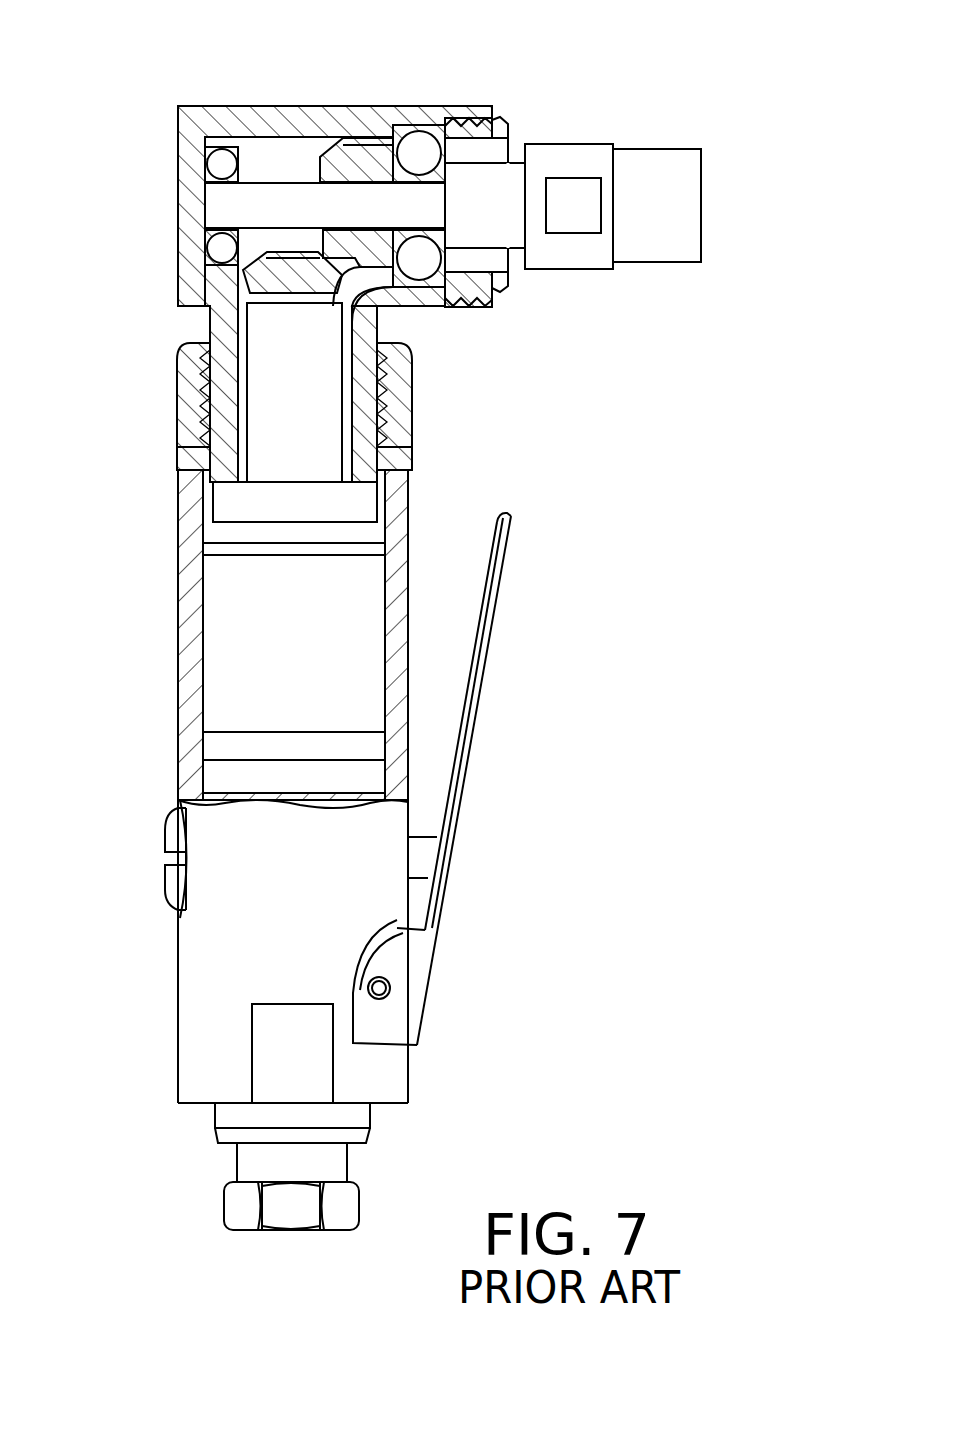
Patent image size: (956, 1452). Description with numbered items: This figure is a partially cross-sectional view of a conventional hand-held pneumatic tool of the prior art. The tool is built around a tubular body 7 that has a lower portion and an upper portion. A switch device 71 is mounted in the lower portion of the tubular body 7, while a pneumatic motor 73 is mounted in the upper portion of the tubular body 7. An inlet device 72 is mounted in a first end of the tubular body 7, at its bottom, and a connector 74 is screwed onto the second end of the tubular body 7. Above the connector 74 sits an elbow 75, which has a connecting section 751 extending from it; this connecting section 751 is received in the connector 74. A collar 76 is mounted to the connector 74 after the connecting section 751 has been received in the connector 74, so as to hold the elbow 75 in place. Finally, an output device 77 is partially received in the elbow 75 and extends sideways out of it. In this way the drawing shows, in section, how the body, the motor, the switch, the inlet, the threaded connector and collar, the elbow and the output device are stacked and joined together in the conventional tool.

The elbow 75 is at (318, 106).
The output device 77 is at (515, 146).
The connecting section 751 is at (220, 342).
The locking nut 76 is at (180, 377).
The connector 74 is at (413, 460).
The tubular body 7 is at (190, 583).
The pneumatic motor 73 is at (222, 663).
The switch device 71 is at (155, 860).
The inlet device 72 is at (375, 1183).